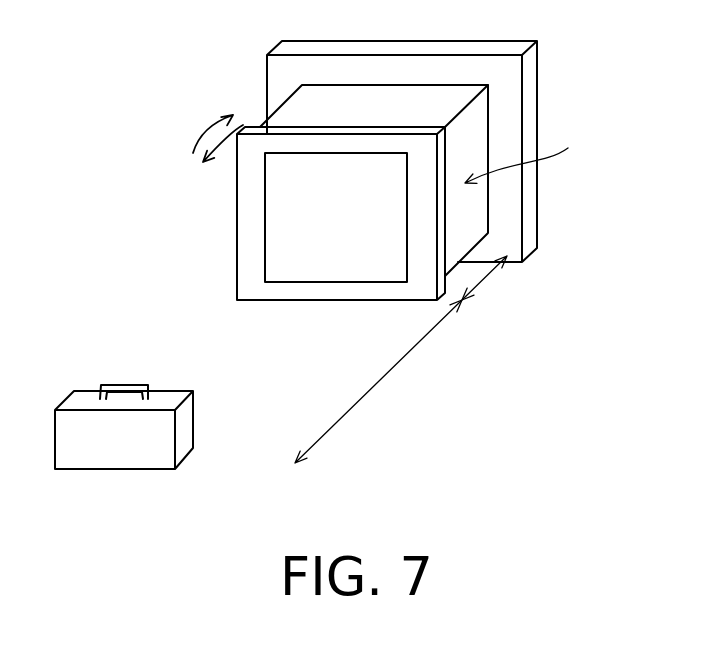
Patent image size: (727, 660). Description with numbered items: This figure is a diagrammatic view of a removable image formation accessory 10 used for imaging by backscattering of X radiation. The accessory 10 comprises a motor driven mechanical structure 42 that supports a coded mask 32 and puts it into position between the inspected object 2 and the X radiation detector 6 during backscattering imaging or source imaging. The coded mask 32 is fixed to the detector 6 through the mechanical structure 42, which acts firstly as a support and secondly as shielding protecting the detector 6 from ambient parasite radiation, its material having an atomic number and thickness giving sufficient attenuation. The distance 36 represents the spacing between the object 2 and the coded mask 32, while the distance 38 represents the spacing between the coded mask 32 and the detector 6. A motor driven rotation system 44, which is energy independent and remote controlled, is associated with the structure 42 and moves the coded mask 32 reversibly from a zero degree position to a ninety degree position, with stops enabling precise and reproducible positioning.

The inspected object 2 is at (182, 432).
The X radiation detector 6 is at (280, 82).
The removable image formation accessory 10 is at (535, 157).
The coded mask 32 is at (278, 253).
The distance between the object and the coded mask 36 is at (388, 373).
The distance between the coded mask and the detector 38 is at (487, 280).
The motor driven mechanical structure 42 is at (292, 113).
The motor driven rotation system 44 is at (252, 198).